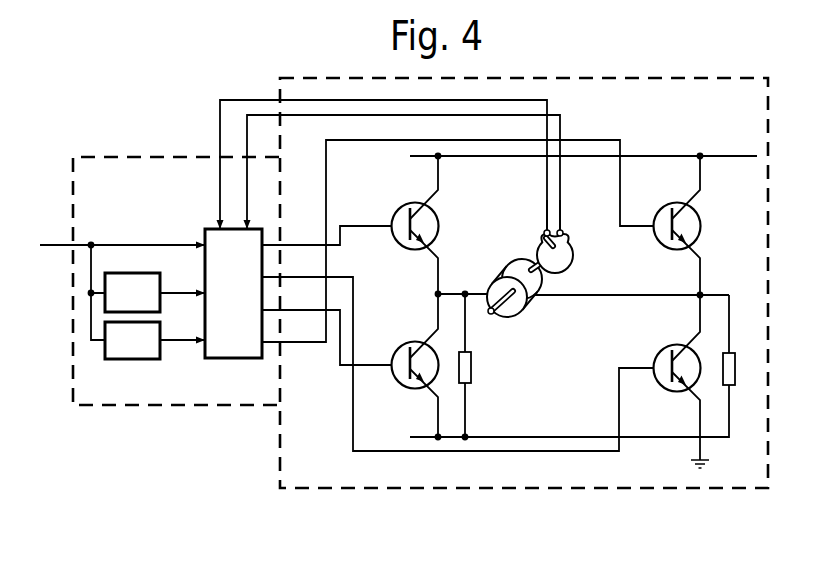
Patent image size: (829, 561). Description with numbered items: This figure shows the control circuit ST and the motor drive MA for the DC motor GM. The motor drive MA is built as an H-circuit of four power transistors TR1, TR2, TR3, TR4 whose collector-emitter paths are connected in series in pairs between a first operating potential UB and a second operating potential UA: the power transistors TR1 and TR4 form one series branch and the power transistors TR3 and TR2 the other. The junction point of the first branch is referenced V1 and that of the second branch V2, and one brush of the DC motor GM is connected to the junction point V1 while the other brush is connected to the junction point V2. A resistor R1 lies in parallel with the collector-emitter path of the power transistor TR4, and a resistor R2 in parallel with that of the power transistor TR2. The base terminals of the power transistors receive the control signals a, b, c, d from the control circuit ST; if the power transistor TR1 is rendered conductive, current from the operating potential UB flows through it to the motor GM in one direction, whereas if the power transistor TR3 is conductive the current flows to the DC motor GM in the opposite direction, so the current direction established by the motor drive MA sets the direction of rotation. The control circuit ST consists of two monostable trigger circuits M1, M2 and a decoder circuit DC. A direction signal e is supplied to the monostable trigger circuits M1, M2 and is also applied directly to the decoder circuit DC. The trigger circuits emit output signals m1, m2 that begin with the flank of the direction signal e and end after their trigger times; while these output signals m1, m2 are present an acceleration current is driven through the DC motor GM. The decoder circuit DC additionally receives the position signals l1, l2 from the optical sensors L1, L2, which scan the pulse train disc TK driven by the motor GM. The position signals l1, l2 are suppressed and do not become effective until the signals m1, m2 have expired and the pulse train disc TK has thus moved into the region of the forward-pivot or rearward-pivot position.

The control circuit ST is at (193, 401).
The motor drive MA is at (475, 482).
The direction signal e is at (122, 280).
The monostable trigger circuit M1 is at (132, 292).
The monostable trigger circuit M2 is at (132, 340).
The output signal m1 is at (182, 282).
The output signal m2 is at (182, 330).
The decoder circuit DC is at (233, 293).
The position signal l1 is at (373, 165).
The position signal l2 is at (402, 172).
The optical sensor L1 is at (536, 215).
The optical sensor L2 is at (572, 215).
The control signal a is at (326, 233).
The control signal b is at (458, 352).
The control signal c is at (326, 325).
The control signal d is at (458, 241).
The first operating potential UB is at (583, 143).
The second operating potential UA is at (576, 456).
The power transistor TR1 is at (415, 225).
The power transistor TR2 is at (677, 377).
The power transistor TR3 is at (677, 225).
The power transistor TR4 is at (415, 365).
The junction point V1 is at (439, 292).
The junction point V2 is at (697, 291).
The resistor R1 is at (477, 366).
The resistor R2 is at (729, 366).
The DC motor GM is at (515, 318).
The pulse train disc TK is at (573, 255).